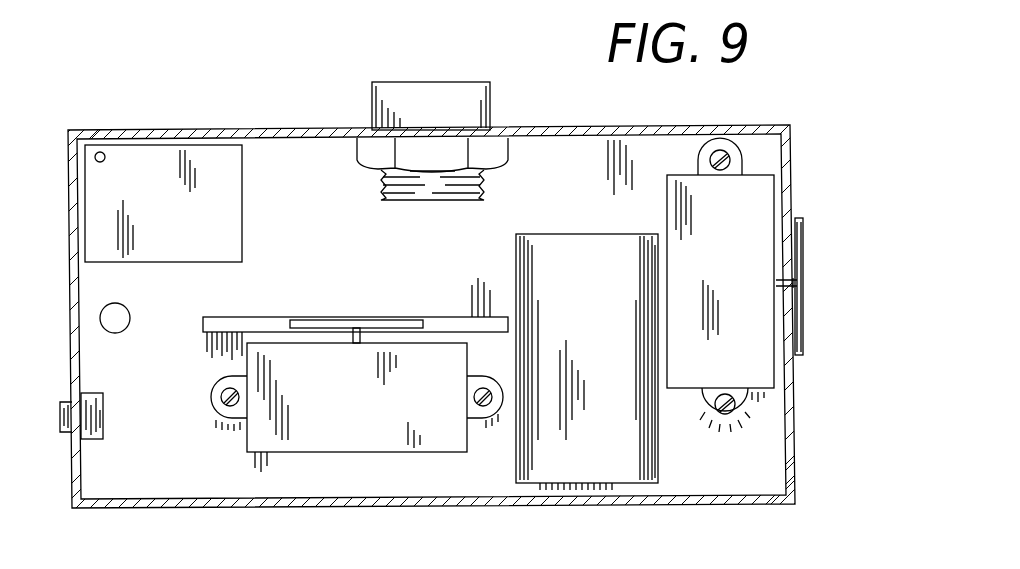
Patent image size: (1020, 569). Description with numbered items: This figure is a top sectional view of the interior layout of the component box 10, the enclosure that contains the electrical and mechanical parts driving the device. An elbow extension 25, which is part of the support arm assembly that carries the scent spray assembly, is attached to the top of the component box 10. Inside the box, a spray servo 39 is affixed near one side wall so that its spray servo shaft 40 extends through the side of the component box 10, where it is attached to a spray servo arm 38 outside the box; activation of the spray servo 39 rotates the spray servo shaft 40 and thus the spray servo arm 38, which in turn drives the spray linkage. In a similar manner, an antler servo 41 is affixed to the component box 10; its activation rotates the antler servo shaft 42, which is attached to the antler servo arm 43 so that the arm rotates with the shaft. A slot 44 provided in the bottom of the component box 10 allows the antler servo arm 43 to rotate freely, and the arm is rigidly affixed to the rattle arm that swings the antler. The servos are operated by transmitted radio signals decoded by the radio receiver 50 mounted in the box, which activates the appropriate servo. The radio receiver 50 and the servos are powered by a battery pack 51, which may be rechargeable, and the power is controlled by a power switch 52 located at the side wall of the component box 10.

The component box 10 is at (466, 500).
The elbow extension 25 is at (490, 118).
The spray servo arm 38 is at (803, 345).
The spray servo 39 is at (763, 212).
The spray servo shaft 40 is at (797, 285).
The antler servo 41 is at (334, 443).
The antler servo shaft 42 is at (346, 337).
The antler servo arm 43 is at (396, 321).
The slot 44 is at (247, 317).
The radio receiver 50 is at (162, 262).
The battery pack 51 is at (553, 475).
The power switch 52 is at (62, 408).